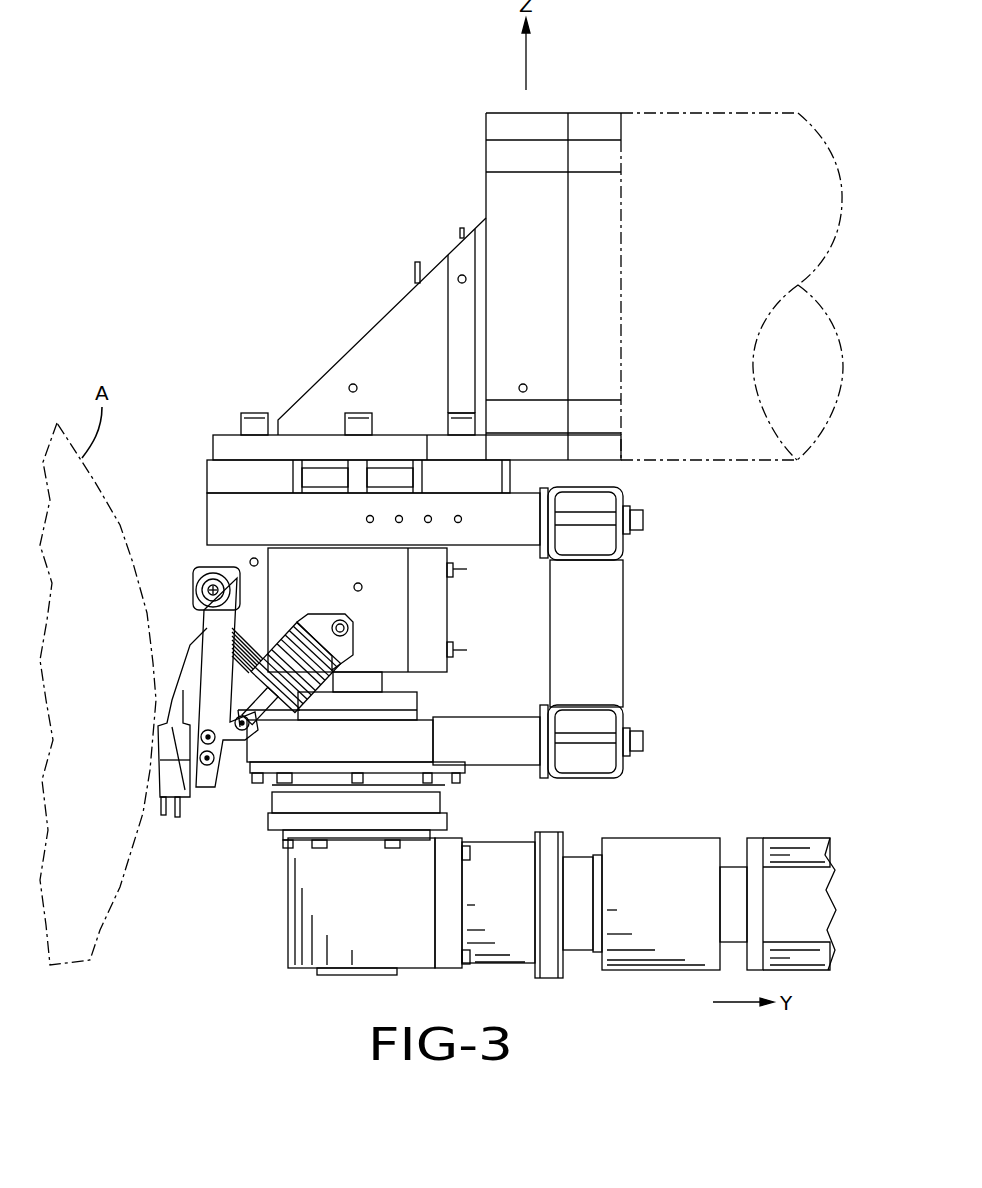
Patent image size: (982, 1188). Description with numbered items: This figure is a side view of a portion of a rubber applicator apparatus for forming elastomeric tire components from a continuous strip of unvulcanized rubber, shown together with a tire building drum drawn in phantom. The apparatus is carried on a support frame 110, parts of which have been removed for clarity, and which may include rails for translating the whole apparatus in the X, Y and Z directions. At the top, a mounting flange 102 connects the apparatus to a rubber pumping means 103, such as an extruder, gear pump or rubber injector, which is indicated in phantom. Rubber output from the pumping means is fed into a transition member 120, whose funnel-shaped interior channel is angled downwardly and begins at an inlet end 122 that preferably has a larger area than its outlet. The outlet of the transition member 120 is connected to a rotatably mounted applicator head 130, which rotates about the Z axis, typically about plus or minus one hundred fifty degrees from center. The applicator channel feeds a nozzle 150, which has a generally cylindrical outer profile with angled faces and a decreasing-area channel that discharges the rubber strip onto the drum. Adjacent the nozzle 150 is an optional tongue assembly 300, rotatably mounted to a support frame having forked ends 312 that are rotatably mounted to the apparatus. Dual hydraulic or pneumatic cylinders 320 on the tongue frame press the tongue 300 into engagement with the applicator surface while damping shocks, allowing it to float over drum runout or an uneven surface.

The mounting flange 102 is at (512, 190).
The rubber pumping means 103 is at (720, 148).
The support frame 110 is at (598, 668).
The transition member 120 is at (378, 331).
The inlet end 122 is at (482, 101).
The applicator head 130 is at (386, 634).
The nozzle 150 is at (178, 685).
The tongue assembly 300 is at (167, 780).
The forked ends 312 is at (226, 628).
The hydraulic or pneumatic cylinders 320 is at (263, 697).